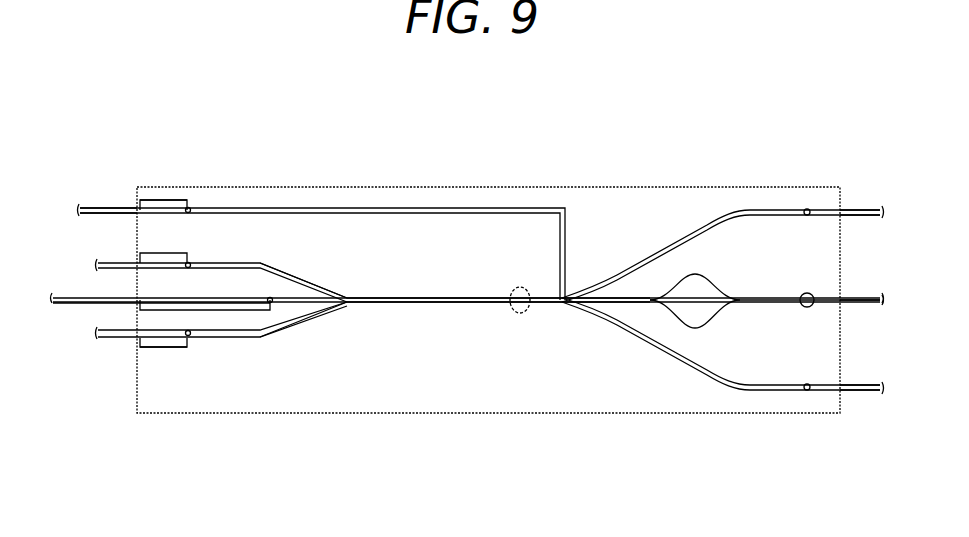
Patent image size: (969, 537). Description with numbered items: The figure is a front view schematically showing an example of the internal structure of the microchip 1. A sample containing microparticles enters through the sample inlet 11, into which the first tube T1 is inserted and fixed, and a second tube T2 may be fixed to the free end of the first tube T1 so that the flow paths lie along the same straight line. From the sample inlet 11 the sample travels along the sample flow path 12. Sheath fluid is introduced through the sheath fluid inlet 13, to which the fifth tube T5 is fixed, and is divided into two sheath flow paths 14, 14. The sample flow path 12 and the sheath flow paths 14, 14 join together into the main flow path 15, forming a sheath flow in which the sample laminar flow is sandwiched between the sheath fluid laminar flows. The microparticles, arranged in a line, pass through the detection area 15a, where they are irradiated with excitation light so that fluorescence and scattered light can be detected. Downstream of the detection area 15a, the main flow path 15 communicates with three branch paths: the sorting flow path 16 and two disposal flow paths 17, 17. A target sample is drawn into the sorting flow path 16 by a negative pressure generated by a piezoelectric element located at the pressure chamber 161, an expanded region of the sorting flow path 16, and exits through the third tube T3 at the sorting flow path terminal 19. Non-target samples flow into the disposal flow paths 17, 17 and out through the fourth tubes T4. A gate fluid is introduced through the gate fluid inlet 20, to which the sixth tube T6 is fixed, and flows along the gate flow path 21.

The microchip 1 is at (821, 186).
The sample inlet 11 is at (202, 312).
The sample flow path 12 is at (314, 297).
The sheath fluid inlet 13 is at (166, 200).
The sheath flow path 14 is at (231, 263).
The main flow path 15 is at (380, 297).
The detection area 15a is at (521, 287).
The sorting flow path 16 is at (612, 303).
The pressure chamber 161 is at (680, 313).
The disposal flow path 17 is at (762, 212).
The sorting flow path terminal 19 is at (807, 308).
The gate fluid inlet 20 is at (156, 200).
The gate flow path 21 is at (462, 208).
The first tube T1 is at (85, 301).
The second tube T2 is at (53, 297).
The third tube T3 is at (860, 306).
The fourth tube T4 is at (860, 218).
The fifth tube T5 is at (122, 258).
The sixth tube T6 is at (108, 208).